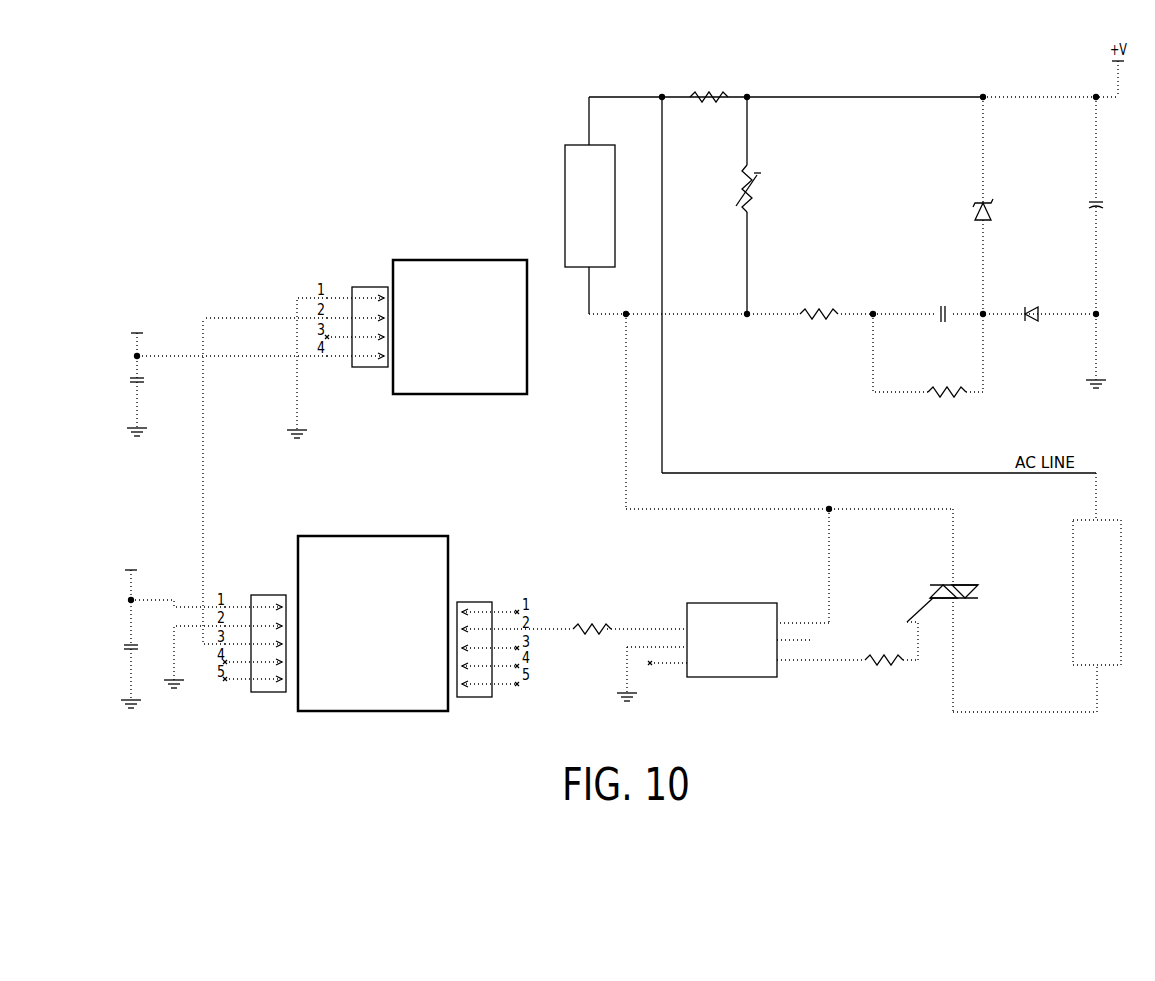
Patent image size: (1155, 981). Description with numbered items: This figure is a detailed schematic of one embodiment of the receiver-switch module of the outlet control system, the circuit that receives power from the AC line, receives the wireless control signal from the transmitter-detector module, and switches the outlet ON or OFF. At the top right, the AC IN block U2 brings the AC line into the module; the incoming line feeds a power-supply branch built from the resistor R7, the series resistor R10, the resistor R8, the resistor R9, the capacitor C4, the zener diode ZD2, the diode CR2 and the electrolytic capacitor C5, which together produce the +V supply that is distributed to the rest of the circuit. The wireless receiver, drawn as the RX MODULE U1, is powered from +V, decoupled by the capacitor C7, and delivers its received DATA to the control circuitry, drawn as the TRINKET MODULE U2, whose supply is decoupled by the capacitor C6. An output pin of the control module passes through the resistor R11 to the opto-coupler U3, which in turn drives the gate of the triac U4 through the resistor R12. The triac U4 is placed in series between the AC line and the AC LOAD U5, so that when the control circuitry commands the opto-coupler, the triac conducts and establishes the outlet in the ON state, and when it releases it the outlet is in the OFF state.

The RX module U1 is at (460, 317).
The AC input module / Trinket module U2 is at (456, 428).
The opto-isolator driver U3 is at (736, 642).
The triac U4 is at (947, 611).
The AC load U5 is at (1109, 592).
The resistor R7 is at (699, 91).
The resistor R8 is at (809, 307).
The resistor R9 is at (928, 355).
The varistor R10 is at (744, 205).
The resistor R11 is at (564, 621).
The resistor R12 is at (875, 654).
The capacitor C4 is at (941, 303).
The electrolytic capacitor C5 is at (1105, 242).
The capacitor C6 is at (121, 628).
The capacitor C7 is at (127, 372).
The diode CR2 is at (1047, 324).
The zener diode ZD2 is at (998, 205).